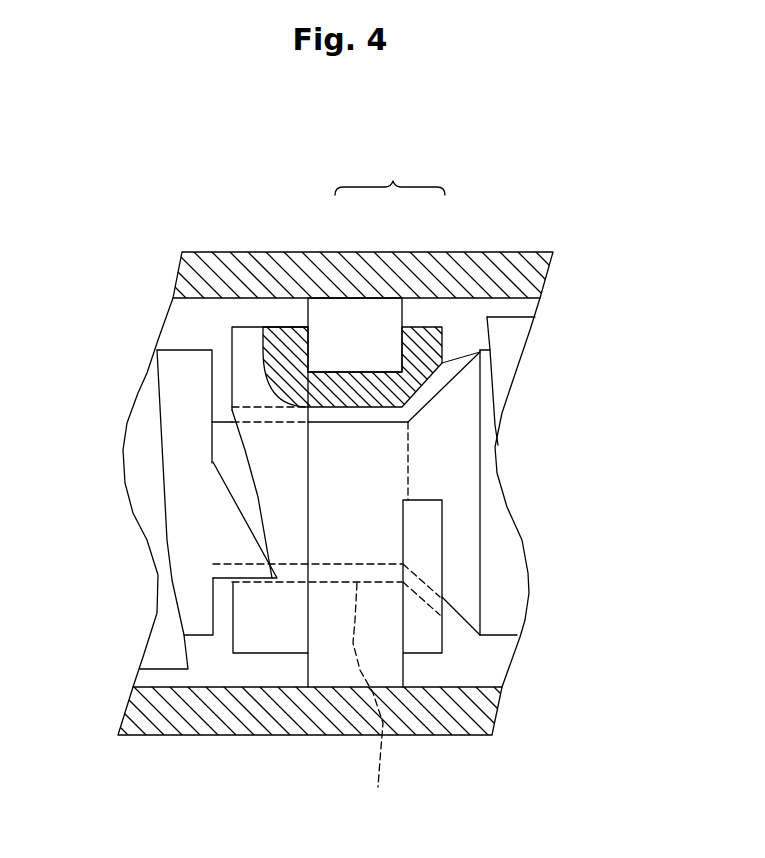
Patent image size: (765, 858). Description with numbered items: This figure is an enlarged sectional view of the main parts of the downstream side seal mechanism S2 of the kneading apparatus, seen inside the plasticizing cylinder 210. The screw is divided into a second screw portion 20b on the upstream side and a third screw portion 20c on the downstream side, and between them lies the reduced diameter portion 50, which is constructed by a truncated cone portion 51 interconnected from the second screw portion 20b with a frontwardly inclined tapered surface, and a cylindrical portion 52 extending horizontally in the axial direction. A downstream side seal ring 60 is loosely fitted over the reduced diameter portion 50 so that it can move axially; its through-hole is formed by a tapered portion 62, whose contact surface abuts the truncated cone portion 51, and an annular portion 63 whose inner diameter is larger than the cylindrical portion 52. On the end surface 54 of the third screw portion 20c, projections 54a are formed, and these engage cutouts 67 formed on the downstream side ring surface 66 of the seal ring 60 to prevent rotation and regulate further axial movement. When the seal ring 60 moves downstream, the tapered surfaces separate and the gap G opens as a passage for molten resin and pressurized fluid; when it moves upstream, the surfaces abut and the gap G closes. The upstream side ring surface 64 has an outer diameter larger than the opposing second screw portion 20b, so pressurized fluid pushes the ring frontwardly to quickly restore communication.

The plasticizing cylinder 210 is at (340, 535).
The third screw portion 20c is at (129, 492).
The second screw portion 20b is at (572, 492).
The end surface 54 is at (305, 394).
The projections 54a is at (289, 520).
The cutouts 67 is at (168, 494).
The downstream side seal ring 60 is at (349, 302).
The reduced diameter portion 50 is at (357, 442).
The downstream side seal mechanism S2 is at (390, 171).
The cylindrical portion 52 is at (394, 426).
The truncated cone portion 51 is at (490, 417).
The gap G is at (506, 341).
The upstream side ring surface 64 is at (506, 593).
The tapered portion 62 is at (498, 599).
The downstream side ring surface 66 is at (235, 681).
The annular portion 63 is at (368, 700).